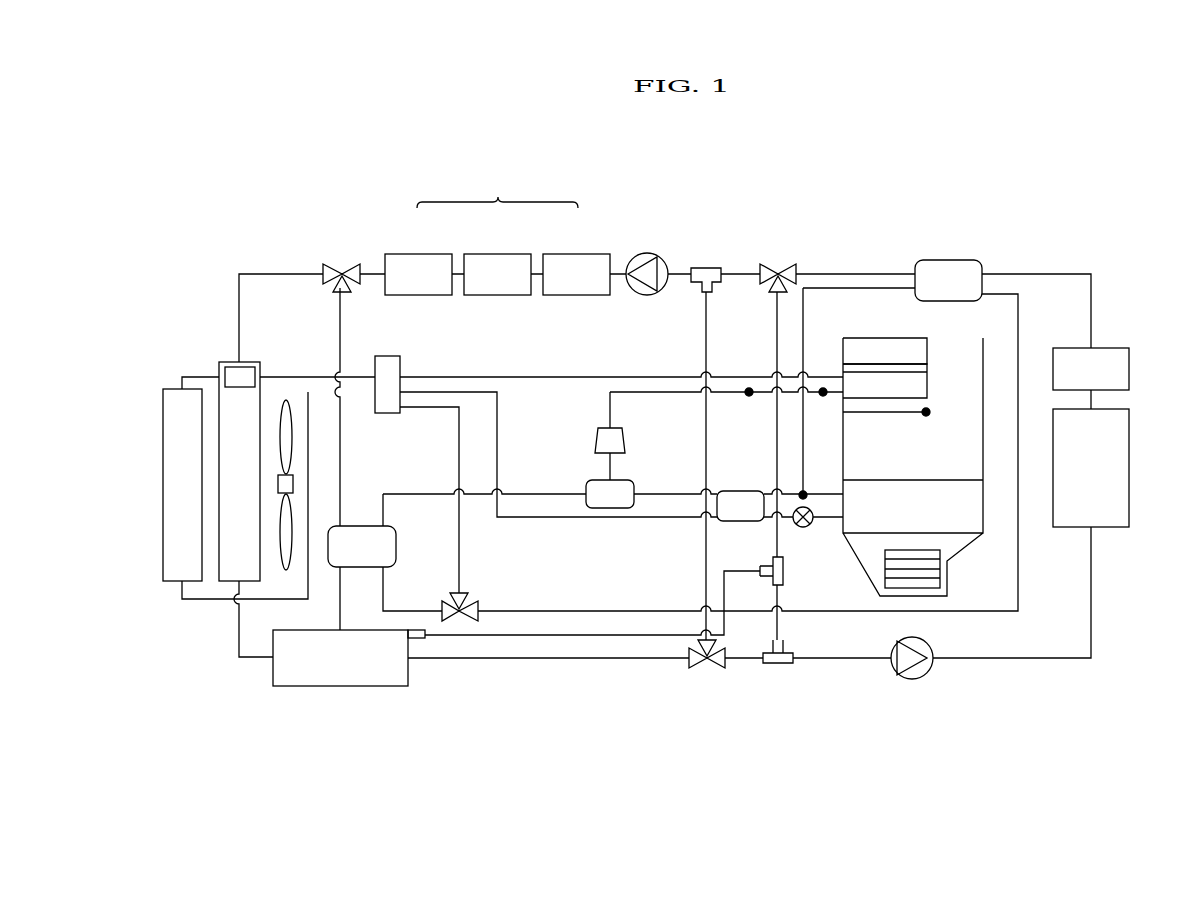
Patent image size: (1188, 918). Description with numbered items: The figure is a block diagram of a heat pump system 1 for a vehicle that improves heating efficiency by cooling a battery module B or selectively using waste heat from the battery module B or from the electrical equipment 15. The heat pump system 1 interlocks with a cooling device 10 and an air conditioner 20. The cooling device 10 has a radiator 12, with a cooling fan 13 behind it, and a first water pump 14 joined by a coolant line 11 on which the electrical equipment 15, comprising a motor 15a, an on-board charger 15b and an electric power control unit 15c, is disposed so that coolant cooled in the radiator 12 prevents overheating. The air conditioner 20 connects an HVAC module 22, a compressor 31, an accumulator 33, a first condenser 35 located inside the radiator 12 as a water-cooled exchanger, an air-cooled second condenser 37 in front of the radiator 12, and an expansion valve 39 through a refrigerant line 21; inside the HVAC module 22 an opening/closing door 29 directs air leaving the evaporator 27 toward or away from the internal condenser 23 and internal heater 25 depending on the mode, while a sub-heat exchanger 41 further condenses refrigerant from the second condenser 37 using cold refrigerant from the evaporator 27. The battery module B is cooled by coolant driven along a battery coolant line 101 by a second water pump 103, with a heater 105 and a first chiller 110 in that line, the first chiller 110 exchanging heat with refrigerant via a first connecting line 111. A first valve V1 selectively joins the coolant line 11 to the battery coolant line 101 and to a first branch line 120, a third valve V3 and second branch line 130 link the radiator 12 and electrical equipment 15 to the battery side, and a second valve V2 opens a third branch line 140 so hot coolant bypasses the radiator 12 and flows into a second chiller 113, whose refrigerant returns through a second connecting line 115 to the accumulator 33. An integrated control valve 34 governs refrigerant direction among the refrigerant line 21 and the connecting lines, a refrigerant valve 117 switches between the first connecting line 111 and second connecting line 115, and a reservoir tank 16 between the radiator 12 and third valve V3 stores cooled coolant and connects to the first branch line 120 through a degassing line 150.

The heat pump system 1 is at (646, 156).
The cooling device 10 is at (238, 250).
The coolant line 11 is at (282, 273).
The radiator 12 is at (260, 400).
The cooling fan 13 is at (292, 400).
The first water pump 14 is at (647, 252).
The electrical equipment 15 is at (497, 236).
The motor 15a is at (417, 253).
The on-board charger 15b is at (497, 253).
The electric power control unit 15c is at (577, 253).
The reservoir tank 16 is at (341, 687).
The air conditioner 20 is at (598, 368).
The refrigerant line 21 is at (515, 392).
The HVAC module 22 is at (945, 467).
The internal condenser 23 is at (927, 383).
The internal heater 25 is at (927, 352).
The evaporator 27 is at (935, 479).
The opening/closing door 29 is at (885, 414).
The compressor 31 is at (597, 440).
The accumulator 33 is at (590, 480).
The integrated control valve 34 is at (400, 362).
The first condenser 35 is at (228, 366).
The second condenser 37 is at (162, 542).
The expansion valve 39 is at (803, 527).
The sub-heat exchanger 41 is at (741, 490).
The battery coolant line 101 is at (1044, 273).
The second water pump 103 is at (912, 680).
The heater 105 is at (1130, 368).
The first chiller 110 is at (948, 259).
The first connecting line 111 is at (458, 440).
The second chiller 113 is at (396, 545).
The second connecting line 115 is at (405, 493).
The refrigerant valve 117 is at (470, 598).
The first branch line 120 is at (776, 334).
The second branch line 130 is at (705, 556).
The third branch line 140 is at (342, 440).
The degassing line 150 is at (569, 636).
The first valve V1 is at (781, 264).
The second valve V2 is at (344, 264).
The third valve V3 is at (711, 670).
The battery module B is at (1130, 468).